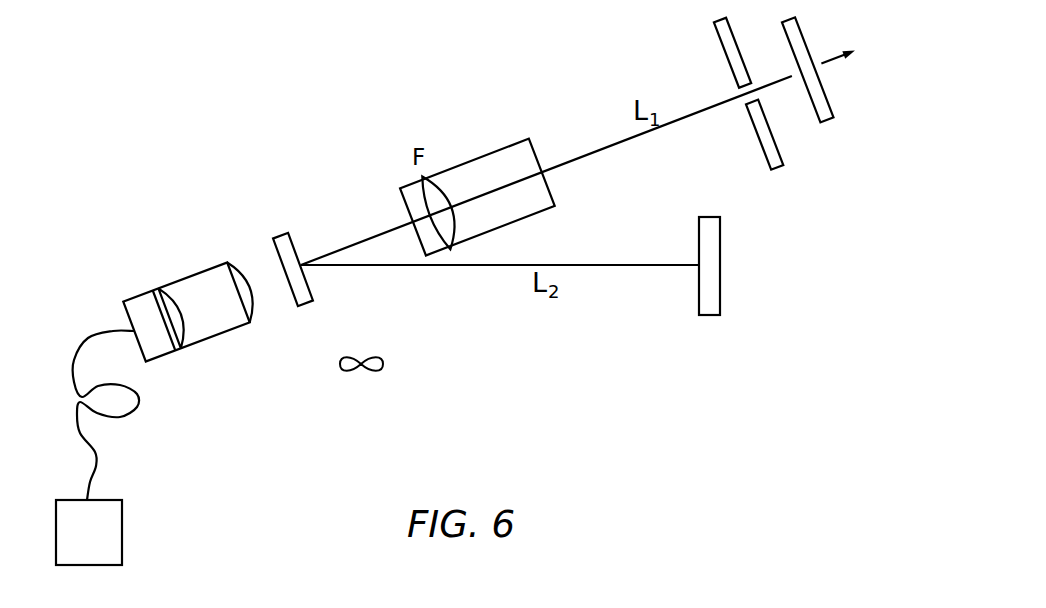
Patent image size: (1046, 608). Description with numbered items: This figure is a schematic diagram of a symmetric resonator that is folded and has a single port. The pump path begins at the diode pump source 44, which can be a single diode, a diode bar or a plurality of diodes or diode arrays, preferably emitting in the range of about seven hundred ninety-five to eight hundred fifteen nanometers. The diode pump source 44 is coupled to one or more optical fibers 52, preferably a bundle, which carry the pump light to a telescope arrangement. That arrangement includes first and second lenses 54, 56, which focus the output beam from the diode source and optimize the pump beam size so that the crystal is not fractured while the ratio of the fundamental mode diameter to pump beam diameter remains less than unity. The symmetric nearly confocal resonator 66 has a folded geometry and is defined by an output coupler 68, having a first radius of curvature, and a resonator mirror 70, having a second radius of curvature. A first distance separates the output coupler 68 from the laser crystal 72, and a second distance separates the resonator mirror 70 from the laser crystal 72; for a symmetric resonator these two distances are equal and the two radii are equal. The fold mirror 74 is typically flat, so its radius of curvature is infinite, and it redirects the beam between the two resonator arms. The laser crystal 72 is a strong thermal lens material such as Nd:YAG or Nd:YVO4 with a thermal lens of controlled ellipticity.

The diode pump source 44 is at (122, 536).
The optical fibers 52 is at (95, 460).
The first lens 54 is at (158, 289).
The second lens 56 is at (225, 263).
The symmetric nearly confocal resonator 66 is at (494, 166).
The output coupler 68 is at (822, 82).
The resonator mirror 70 is at (736, 268).
The laser crystal 72 is at (515, 208).
The fold mirror 74 is at (307, 283).